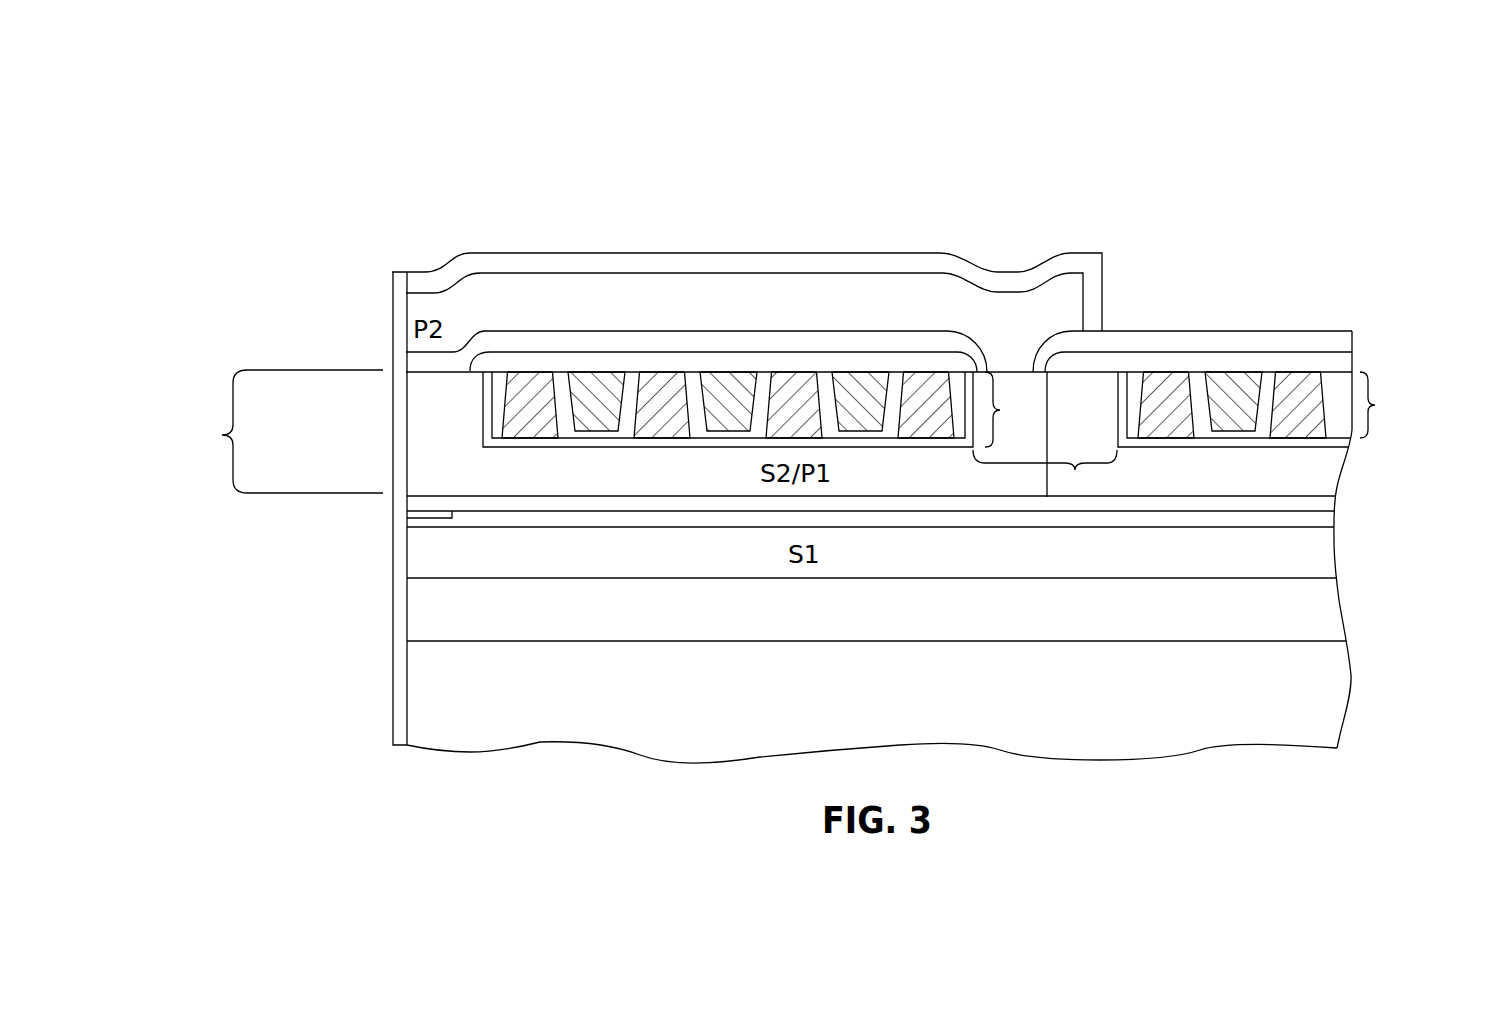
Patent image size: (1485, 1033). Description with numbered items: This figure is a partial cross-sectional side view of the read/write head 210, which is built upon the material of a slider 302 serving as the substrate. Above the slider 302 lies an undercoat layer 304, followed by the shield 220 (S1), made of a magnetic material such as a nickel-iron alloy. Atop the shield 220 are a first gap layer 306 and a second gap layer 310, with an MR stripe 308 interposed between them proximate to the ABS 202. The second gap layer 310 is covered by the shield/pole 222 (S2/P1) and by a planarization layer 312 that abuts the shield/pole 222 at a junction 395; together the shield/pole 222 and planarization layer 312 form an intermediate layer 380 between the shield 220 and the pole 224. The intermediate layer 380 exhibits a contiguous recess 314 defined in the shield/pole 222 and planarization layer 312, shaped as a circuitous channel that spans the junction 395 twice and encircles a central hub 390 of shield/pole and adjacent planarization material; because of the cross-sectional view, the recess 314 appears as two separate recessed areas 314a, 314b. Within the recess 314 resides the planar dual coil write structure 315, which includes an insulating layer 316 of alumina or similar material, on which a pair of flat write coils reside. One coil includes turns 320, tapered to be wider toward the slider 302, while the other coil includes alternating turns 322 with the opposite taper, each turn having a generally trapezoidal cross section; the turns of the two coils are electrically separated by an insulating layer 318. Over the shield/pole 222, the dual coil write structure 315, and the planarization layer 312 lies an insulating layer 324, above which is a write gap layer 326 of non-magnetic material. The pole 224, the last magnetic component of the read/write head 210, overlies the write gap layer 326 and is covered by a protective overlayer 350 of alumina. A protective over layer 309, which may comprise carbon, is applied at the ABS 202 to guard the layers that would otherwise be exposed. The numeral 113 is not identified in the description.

The read/write head 210 is at (1055, 112).
The pole 224 is at (413, 303).
The protective overlayer 350 is at (965, 262).
The write gap layer 326 is at (480, 337).
The insulating layer 324 is at (515, 358).
The insulating layer 316 is at (480, 428).
The insulation layer portion 113 is at (1345, 444).
The turns 320 is at (535, 380).
The alternating turns 322 is at (600, 377).
The layer 318 is at (692, 380).
The recess 314 is at (458, 402).
The recessed area 314a is at (620, 447).
The recessed area 314b is at (1214, 445).
The junction 395 is at (1048, 407).
The planar dual coil write structure 315 is at (1000, 410).
The hub 390 is at (1075, 470).
The intermediate layer 380 is at (274, 431).
The shield/pole 222 is at (428, 470).
The planarization layer 312 is at (1332, 478).
The second gap layer 310 is at (413, 502).
The MR stripe 308 is at (442, 520).
The first gap layer 306 is at (1324, 521).
The shield 220 is at (1328, 559).
The undercoat layer 304 is at (1336, 611).
The slider 302 is at (1336, 694).
The protective over layer 309 is at (397, 613).
The ABS 202 is at (408, 703).